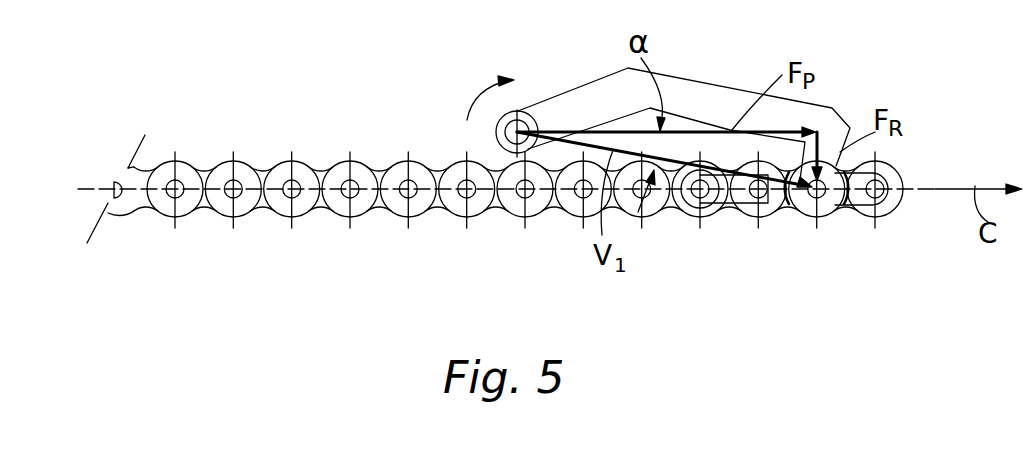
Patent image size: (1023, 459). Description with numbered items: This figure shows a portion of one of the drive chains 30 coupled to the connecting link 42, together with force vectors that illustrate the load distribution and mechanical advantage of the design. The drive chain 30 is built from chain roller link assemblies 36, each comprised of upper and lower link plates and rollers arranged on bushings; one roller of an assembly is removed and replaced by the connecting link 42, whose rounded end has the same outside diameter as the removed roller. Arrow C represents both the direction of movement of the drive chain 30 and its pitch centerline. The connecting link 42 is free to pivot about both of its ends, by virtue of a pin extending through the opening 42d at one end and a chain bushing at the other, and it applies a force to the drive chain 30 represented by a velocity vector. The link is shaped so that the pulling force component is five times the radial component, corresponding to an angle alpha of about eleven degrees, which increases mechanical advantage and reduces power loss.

The drive chain 30 is at (338, 131).
The chain roller link assembly 36 is at (340, 224).
The connecting link 42 is at (733, 55).
The opening 42d is at (498, 132).